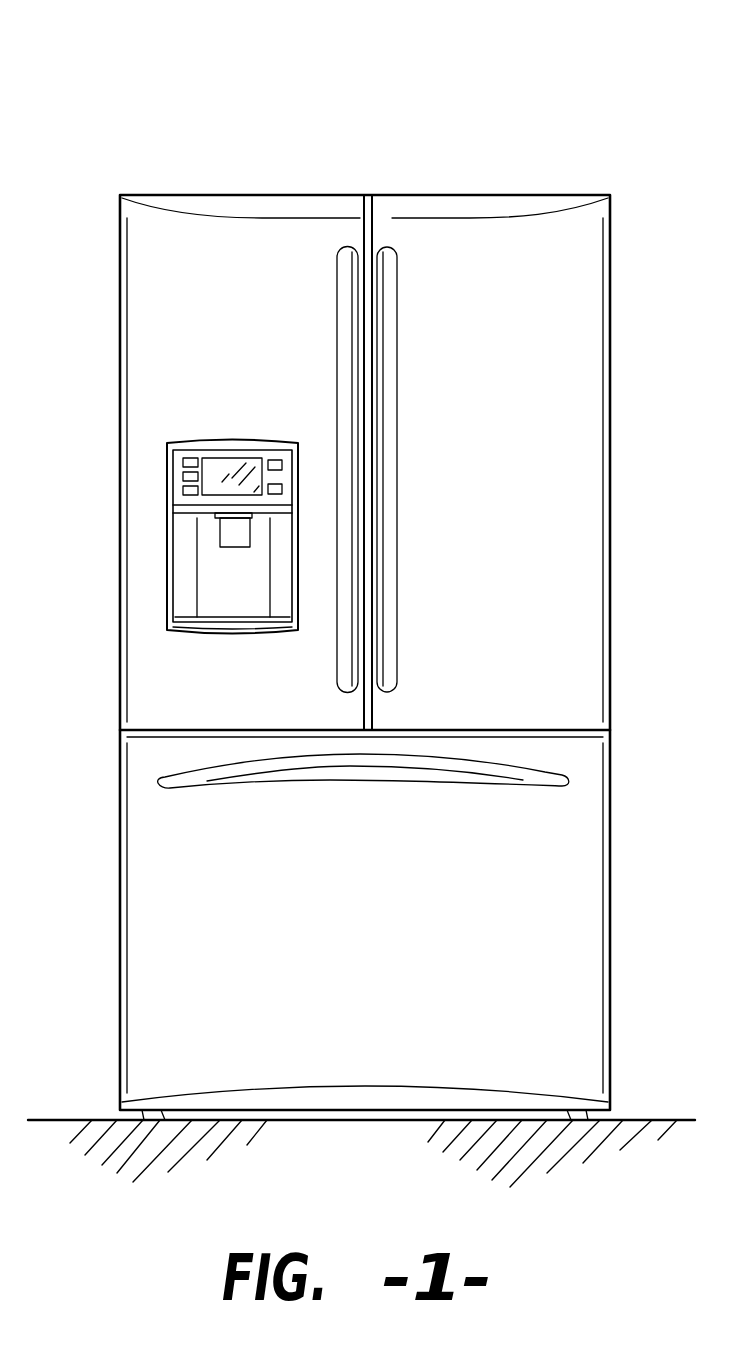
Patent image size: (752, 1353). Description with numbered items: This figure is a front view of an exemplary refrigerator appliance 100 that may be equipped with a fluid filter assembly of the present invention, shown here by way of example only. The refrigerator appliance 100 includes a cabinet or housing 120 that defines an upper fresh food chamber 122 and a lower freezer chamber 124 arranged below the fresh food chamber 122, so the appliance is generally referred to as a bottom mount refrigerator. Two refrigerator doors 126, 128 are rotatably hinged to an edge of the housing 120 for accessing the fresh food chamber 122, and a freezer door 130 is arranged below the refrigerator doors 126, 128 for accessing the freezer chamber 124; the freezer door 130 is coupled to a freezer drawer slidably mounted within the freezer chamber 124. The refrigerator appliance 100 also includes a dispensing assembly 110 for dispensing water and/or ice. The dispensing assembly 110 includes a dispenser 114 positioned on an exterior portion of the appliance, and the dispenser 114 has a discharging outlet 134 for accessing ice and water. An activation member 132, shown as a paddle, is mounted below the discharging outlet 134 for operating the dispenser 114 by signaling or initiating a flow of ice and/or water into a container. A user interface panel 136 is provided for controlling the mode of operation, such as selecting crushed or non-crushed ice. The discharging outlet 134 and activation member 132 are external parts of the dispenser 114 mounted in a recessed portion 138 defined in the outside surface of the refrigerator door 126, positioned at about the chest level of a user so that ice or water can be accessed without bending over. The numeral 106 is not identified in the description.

The refrigerator appliance 100 is at (594, 107).
The cabinet 106 is at (615, 197).
The dispensing assembly 110 is at (185, 414).
The dispenser 114 is at (227, 578).
The cabinet or housing 120 is at (118, 932).
The fresh food chamber 122 is at (567, 465).
The freezer chamber 124 is at (565, 862).
The refrigerator door 126 is at (150, 297).
The refrigerator door 128 is at (583, 338).
The freezer door 130 is at (577, 978).
The activation member 132 is at (230, 520).
The discharging outlet 134 is at (226, 533).
The user interface panel 136 is at (178, 472).
The recessed portion 138 is at (252, 600).